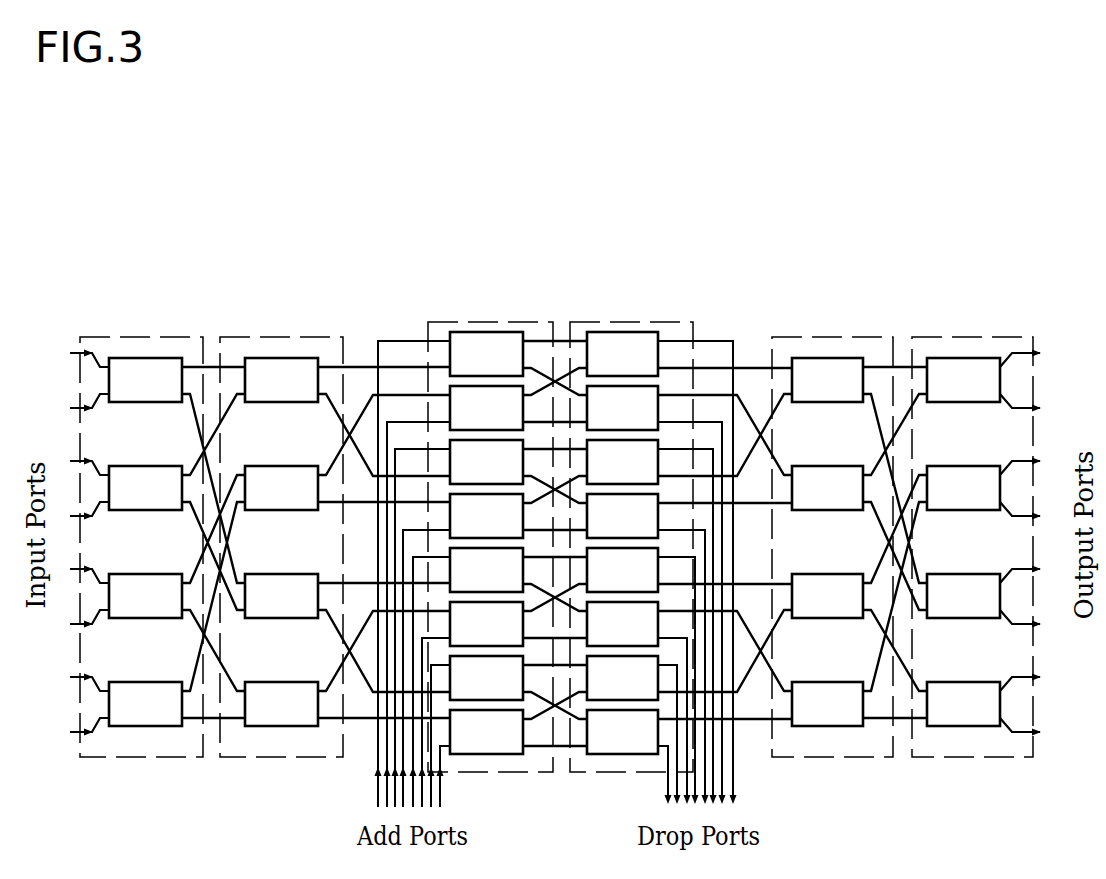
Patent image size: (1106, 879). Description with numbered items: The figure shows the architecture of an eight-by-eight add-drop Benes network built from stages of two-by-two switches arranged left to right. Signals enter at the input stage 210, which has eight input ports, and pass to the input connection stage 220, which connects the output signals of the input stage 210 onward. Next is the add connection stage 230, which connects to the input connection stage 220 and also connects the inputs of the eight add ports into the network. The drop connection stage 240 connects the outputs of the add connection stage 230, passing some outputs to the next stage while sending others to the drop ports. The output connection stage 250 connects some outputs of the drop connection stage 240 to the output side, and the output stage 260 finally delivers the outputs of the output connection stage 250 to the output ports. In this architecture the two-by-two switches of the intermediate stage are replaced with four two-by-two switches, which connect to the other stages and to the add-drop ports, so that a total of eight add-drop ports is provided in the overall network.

The input stage 210 is at (155, 333).
The input connection stage 220 is at (286, 333).
The add connection stage 230 is at (498, 320).
The drop connection stage 240 is at (628, 320).
The output connection stage 250 is at (832, 333).
The output stage 260 is at (970, 333).